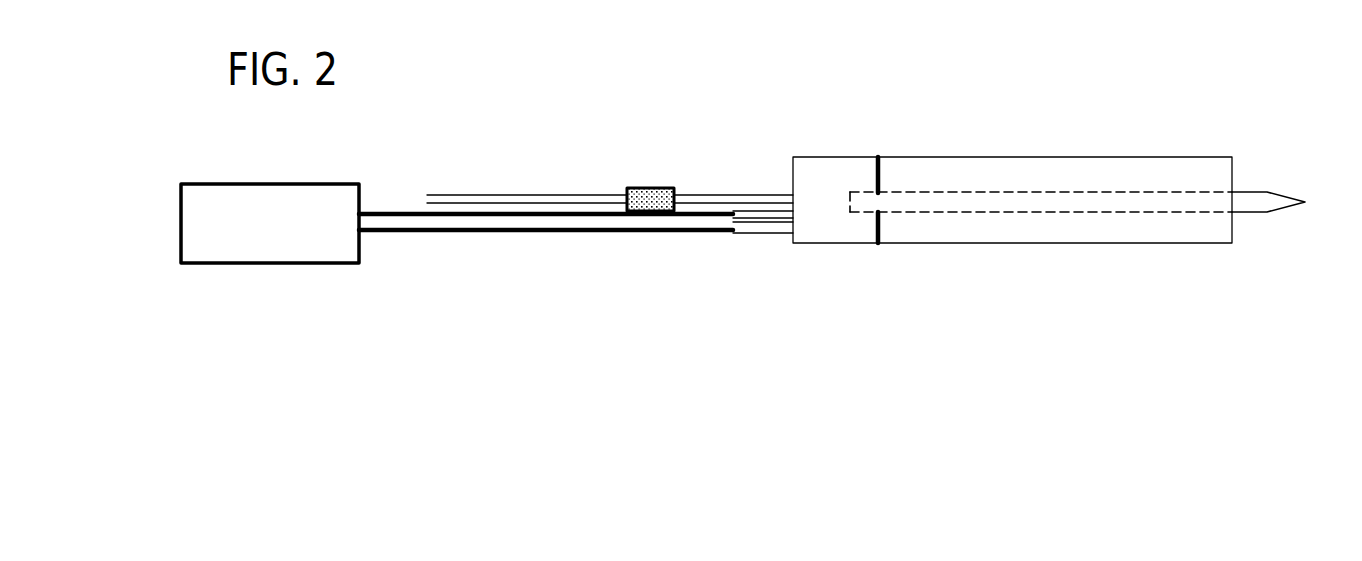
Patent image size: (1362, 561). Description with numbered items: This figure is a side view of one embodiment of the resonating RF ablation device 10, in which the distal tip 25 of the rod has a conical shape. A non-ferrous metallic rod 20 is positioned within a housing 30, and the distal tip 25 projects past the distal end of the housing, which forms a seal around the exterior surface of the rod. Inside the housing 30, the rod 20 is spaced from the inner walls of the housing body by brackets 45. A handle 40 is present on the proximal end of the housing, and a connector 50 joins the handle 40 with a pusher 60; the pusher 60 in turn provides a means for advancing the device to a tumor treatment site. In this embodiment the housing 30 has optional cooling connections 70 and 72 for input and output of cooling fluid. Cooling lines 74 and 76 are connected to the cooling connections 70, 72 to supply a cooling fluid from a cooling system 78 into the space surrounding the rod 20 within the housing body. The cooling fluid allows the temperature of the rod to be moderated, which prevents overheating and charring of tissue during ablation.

The resonating RF ablation device 10 is at (1247, 97).
The non-ferrous metallic rod 20 is at (1120, 157).
The distal tip 25 is at (1267, 192).
The housing 30 is at (1034, 132).
The handle 40 is at (703, 193).
The brackets 45 is at (882, 176).
The connector 50 is at (633, 188).
The pusher 60 is at (492, 195).
The cooling connection 70 is at (767, 234).
The cooling connection 72 is at (743, 221).
The cooling line 74 is at (538, 234).
The cooling line 76 is at (467, 218).
The cooling system 78 is at (328, 263).